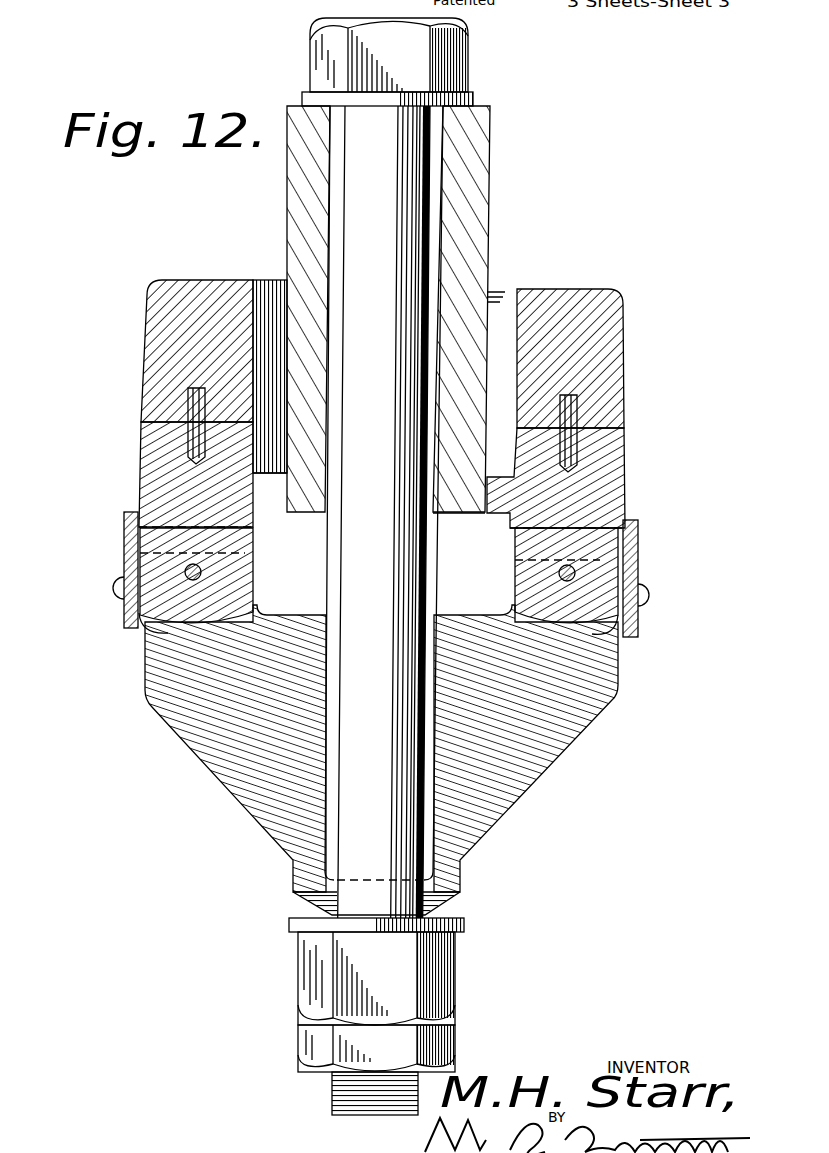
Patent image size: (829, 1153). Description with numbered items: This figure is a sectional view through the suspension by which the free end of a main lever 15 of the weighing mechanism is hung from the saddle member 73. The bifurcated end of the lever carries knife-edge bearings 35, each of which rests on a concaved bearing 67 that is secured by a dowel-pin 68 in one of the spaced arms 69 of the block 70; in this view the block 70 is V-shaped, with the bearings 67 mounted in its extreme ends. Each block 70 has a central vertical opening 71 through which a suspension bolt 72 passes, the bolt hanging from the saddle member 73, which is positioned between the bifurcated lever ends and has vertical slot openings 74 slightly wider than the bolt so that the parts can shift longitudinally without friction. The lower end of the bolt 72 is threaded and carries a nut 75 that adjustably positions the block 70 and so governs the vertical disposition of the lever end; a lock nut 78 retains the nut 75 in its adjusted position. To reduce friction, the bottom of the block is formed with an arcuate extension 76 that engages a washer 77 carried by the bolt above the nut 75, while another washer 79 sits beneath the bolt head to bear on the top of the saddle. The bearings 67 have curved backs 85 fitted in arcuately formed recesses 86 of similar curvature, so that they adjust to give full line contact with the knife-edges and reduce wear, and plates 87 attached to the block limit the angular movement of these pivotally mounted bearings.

The main lever 15 is at (378, 384).
The knife-edge bearing 35 is at (147, 423).
The concaved bearing 67 is at (243, 546).
The dowel-pin 68 is at (185, 569).
The spaced arm 69 is at (158, 660).
The block 70 is at (374, 748).
The central vertical opening 71 is at (326, 820).
The suspension bolt 72 is at (381, 610).
The saddle member 73 is at (487, 186).
The opening 74 is at (338, 232).
The nut 75 is at (310, 978).
The arcuate extension 76 is at (450, 907).
The washer 77 is at (300, 917).
The lock nut 78 is at (315, 1042).
The washer 79 is at (476, 101).
The curved back 85 is at (225, 620).
The arcuately formed recess 86 is at (140, 625).
The plate 87 is at (126, 521).